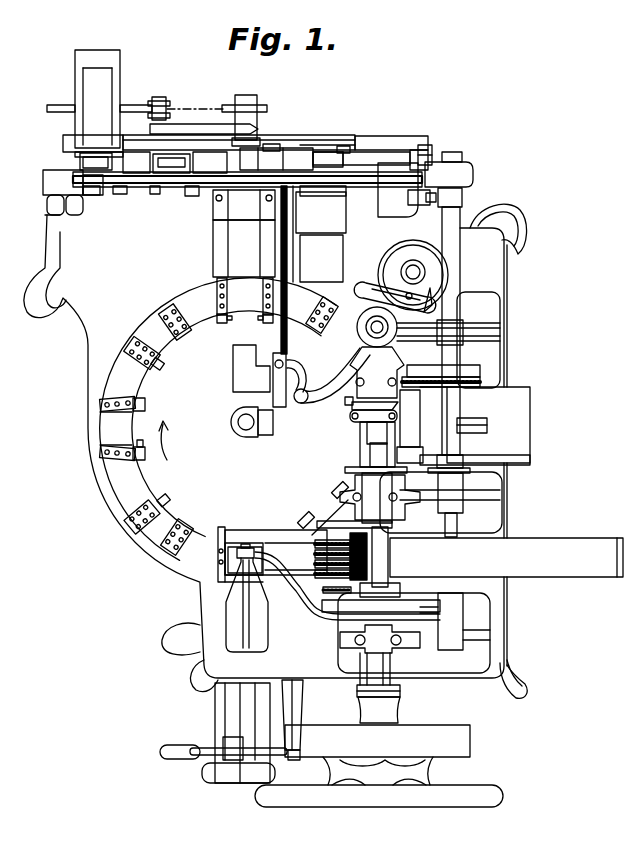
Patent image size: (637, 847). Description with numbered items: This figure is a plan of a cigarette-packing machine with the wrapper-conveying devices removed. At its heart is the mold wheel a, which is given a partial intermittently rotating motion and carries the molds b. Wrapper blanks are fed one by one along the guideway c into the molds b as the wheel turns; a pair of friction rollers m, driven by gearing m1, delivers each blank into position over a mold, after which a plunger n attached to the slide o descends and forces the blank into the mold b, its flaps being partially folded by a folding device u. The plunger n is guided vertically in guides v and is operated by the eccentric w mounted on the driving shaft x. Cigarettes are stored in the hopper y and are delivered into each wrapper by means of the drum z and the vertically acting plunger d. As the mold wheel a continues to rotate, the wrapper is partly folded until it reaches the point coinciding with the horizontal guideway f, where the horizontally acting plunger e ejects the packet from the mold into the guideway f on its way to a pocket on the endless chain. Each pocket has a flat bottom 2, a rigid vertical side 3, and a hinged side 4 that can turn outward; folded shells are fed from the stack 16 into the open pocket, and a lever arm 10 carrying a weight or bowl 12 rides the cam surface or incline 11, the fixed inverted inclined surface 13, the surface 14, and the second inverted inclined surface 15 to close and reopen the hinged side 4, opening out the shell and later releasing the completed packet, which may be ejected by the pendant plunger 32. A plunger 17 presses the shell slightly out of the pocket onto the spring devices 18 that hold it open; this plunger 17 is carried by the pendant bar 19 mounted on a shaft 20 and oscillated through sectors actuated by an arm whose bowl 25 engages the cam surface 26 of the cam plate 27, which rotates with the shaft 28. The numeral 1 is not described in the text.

The arm 1 is at (268, 549).
The flat bottom 2 is at (178, 170).
The vertical side 3 is at (150, 188).
The hinged side 4 is at (190, 190).
The lever arm 10 is at (288, 158).
The cam surface or incline 11 is at (342, 146).
The weight or bowl 12 is at (318, 150).
The fixed inverted inclined surface 13 is at (398, 146).
The surface 14 is at (208, 143).
The second inverted inclined surface 15 is at (165, 142).
The stack 16 is at (321, 237).
The plunger 17 is at (272, 152).
The spring devices 18 is at (262, 207).
The pendant bar 19 is at (258, 147).
The shaft 20 is at (362, 162).
The bowl 25 is at (430, 152).
The cam surface 26 is at (463, 160).
The cam plate 27 is at (470, 174).
The shaft 28 is at (458, 254).
The pendant plunger 32 is at (98, 196).
The mold wheel a is at (132, 392).
The molds b is at (147, 322).
The guideway c is at (475, 426).
The vertically acting plunger d is at (238, 566).
The horizontally acting plunger e is at (245, 368).
The horizontal guideway f is at (238, 248).
The friction rollers m is at (418, 412).
The gearing m1 is at (440, 378).
The plunger n is at (360, 438).
The slide o is at (348, 411).
The folding device u is at (162, 364).
The guides v is at (345, 400).
The eccentric w is at (370, 418).
The driving shaft x is at (380, 555).
The hopper y is at (506, 557).
The drum z is at (330, 565).